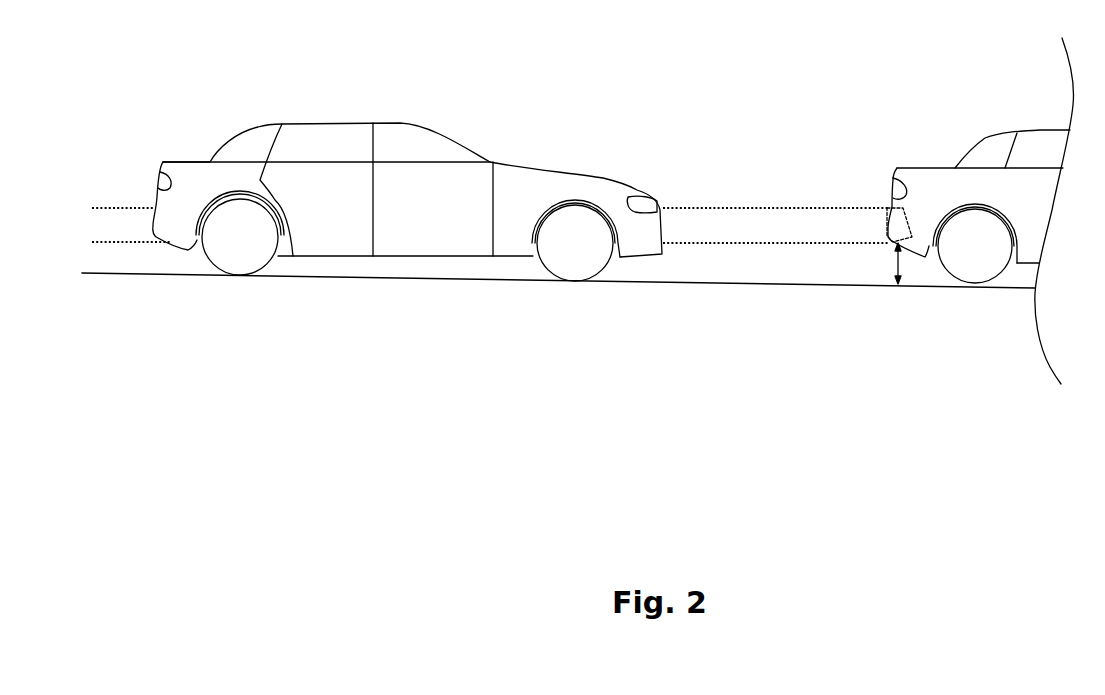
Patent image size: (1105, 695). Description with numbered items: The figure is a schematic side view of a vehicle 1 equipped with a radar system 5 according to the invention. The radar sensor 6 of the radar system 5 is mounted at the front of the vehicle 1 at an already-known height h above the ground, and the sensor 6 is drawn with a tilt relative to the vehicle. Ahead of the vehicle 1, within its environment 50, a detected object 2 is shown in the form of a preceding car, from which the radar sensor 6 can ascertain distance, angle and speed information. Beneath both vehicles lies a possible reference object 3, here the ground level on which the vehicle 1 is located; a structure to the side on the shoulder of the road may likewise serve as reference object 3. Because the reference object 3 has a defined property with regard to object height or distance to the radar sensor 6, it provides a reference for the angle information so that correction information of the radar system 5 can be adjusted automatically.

The vehicle 1 is at (923, 168).
The detected object 2 is at (603, 178).
The reference object 3 is at (730, 243).
The radar system 5 is at (923, 210).
The radar sensor 6 is at (902, 210).
The environment 50 is at (773, 118).
The height h is at (887, 263).